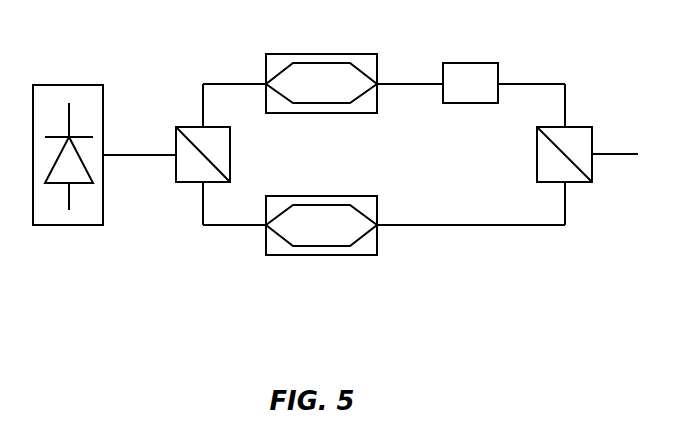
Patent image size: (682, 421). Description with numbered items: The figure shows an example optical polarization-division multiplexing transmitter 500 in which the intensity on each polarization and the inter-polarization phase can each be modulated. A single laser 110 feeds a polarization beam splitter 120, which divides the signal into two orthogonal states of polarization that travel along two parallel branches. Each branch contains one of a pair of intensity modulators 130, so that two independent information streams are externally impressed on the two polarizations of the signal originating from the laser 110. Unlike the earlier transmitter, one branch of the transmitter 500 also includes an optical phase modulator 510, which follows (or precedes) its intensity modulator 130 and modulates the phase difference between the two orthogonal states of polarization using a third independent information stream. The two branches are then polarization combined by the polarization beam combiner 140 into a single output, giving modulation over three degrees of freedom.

The laser 110 is at (85, 225).
The polarization beam splitter 120 is at (187, 127).
The intensity modulators 130 is at (378, 62).
The polarization beam combiner 140 is at (592, 172).
The optical transmitter 500 is at (140, 320).
The optical phase modulator 510 is at (462, 105).